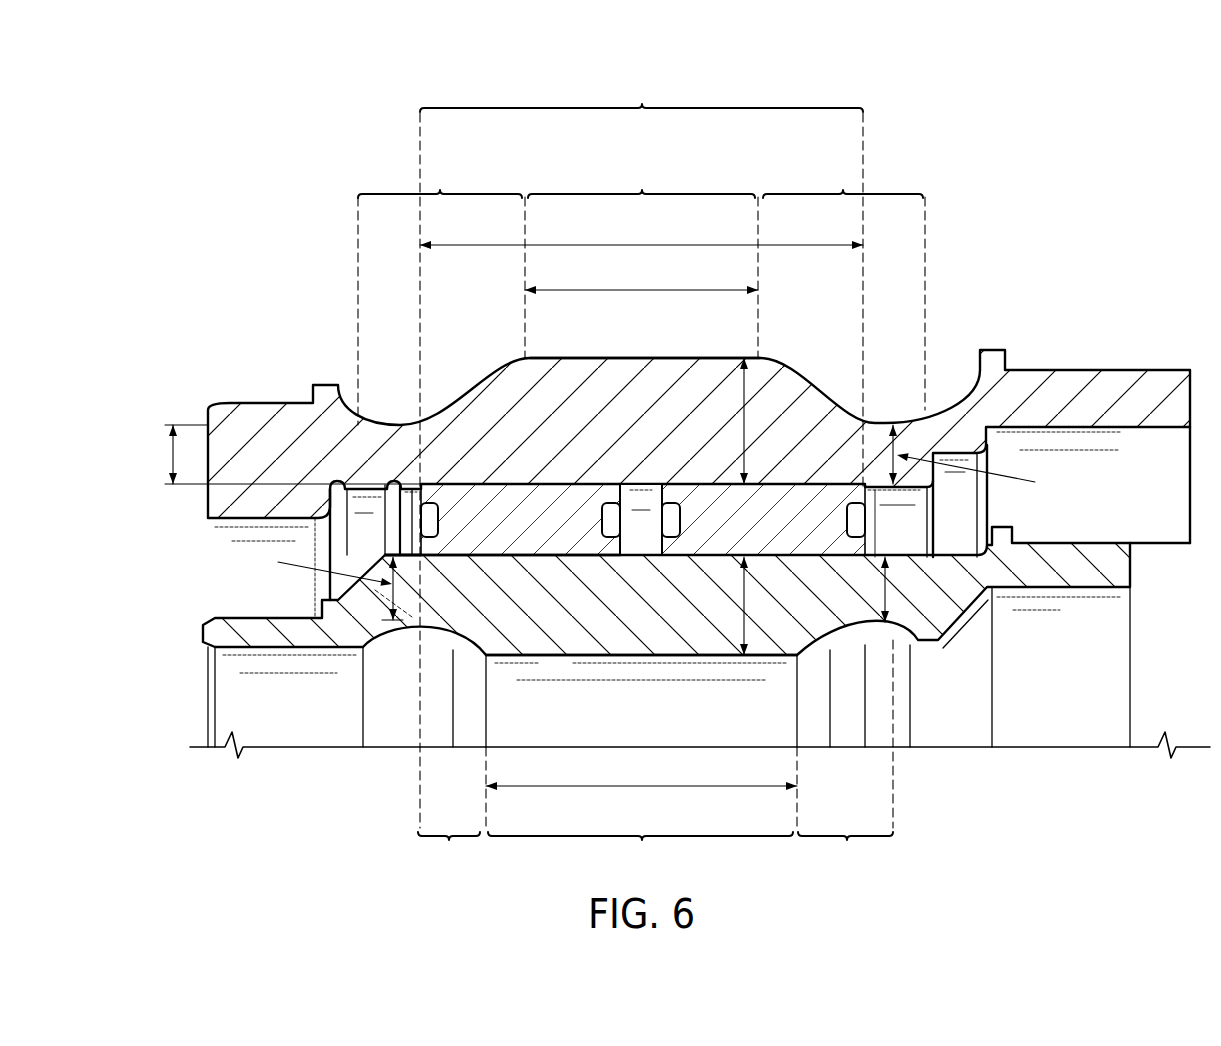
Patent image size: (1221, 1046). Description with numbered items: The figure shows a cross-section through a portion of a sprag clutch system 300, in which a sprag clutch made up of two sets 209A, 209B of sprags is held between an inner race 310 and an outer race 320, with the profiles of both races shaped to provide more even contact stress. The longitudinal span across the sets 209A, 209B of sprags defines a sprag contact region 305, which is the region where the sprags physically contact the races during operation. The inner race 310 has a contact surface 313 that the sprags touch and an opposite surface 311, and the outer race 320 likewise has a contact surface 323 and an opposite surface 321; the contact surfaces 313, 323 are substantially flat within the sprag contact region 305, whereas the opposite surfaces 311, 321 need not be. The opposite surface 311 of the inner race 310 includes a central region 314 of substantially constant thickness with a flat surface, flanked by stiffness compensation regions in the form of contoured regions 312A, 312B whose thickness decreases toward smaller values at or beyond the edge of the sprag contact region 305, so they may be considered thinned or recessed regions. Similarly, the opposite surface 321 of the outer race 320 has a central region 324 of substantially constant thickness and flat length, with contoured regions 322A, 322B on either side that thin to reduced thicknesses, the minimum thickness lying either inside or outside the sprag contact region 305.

The sprag clutch system 300 is at (436, 58).
The sprag contact region 305 is at (641, 91).
The contoured region 322A is at (440, 177).
The central region 324 is at (641, 177).
The contoured region 322B is at (843, 177).
The opposite surface 321 is at (620, 358).
The outer race 320 is at (662, 403).
The contact surface 323 is at (677, 486).
The set of sprags 209A is at (545, 537).
The set of sprags 209B is at (793, 537).
The contact surface 313 is at (604, 557).
The inner race 310 is at (680, 619).
The opposite surface 311 is at (543, 655).
The contoured region 312A is at (449, 855).
The central region 314 is at (640, 855).
The contoured region 312B is at (845, 855).